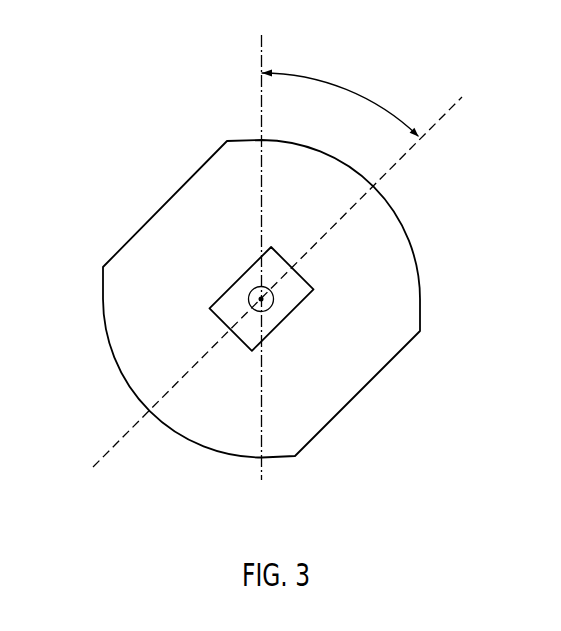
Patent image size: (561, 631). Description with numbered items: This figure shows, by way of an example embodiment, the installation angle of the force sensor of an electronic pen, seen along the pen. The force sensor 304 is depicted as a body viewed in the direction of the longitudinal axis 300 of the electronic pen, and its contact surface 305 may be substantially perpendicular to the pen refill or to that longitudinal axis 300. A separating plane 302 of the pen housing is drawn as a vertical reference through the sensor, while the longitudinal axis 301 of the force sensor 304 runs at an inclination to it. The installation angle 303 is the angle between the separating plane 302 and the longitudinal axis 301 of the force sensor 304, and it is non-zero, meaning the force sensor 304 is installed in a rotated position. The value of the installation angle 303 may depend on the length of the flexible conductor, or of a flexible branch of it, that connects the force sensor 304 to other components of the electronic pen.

The longitudinal axis of the electronic pen 300 is at (248, 287).
The longitudinal axis of the force sensor 301 is at (438, 121).
The separating plane 302 is at (263, 44).
The installation angle 303 is at (355, 92).
The force sensor 304 is at (412, 247).
The contact surface 305 is at (292, 304).